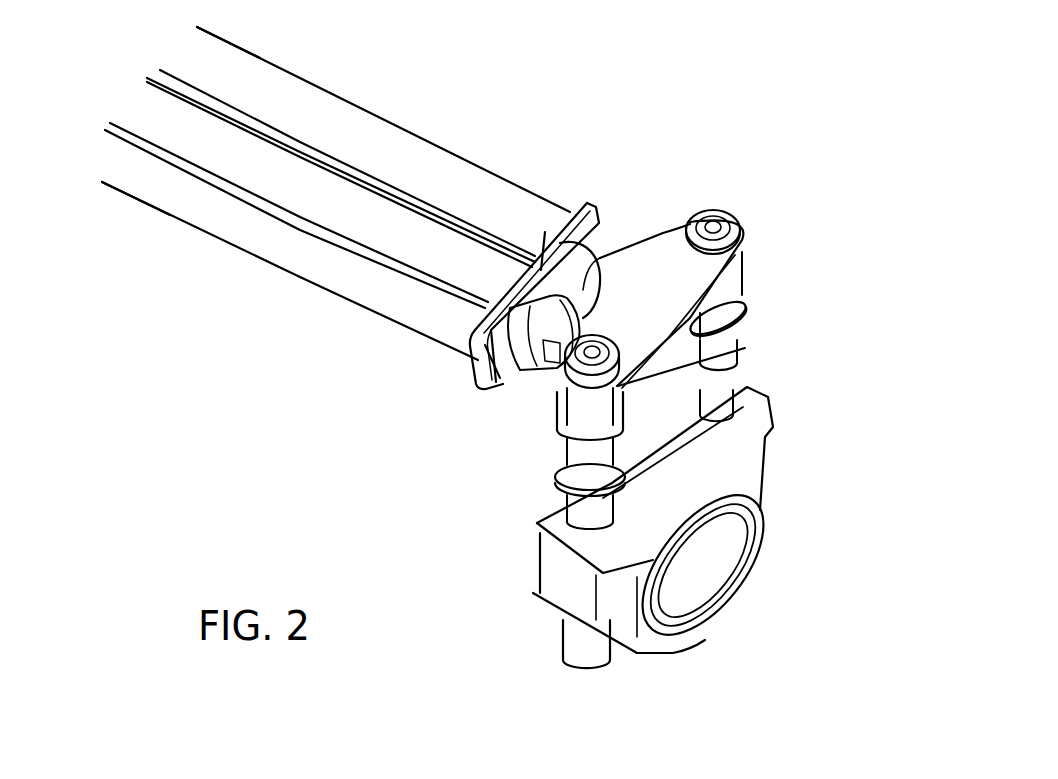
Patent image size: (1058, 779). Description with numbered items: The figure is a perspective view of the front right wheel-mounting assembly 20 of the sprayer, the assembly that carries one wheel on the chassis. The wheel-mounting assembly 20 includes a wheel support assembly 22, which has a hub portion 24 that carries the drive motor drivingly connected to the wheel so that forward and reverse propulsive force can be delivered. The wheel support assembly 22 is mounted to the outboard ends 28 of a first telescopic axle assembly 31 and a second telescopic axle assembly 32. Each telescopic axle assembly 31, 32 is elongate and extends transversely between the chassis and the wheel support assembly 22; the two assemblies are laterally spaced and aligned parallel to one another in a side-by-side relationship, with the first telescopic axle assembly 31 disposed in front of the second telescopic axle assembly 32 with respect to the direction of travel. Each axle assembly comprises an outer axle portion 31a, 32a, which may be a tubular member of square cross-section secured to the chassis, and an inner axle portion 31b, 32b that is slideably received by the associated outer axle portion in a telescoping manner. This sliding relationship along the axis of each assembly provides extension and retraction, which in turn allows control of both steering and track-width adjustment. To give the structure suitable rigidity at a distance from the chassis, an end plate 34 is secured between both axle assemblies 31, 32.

The wheel-mounting assembly 20 is at (663, 173).
The wheel support assembly 22 is at (743, 275).
The hub portion 24 is at (757, 483).
The outboard ends 28 is at (473, 390).
The first telescopic axle assembly 31 is at (458, 163).
The outer axle portion 31a is at (253, 60).
The inner axle portion 31b is at (600, 253).
The second telescopic axle assembly 32 is at (385, 303).
The outer axle portion 32a is at (167, 198).
The inner axle portion 32b is at (521, 347).
The end plate 34 is at (593, 202).